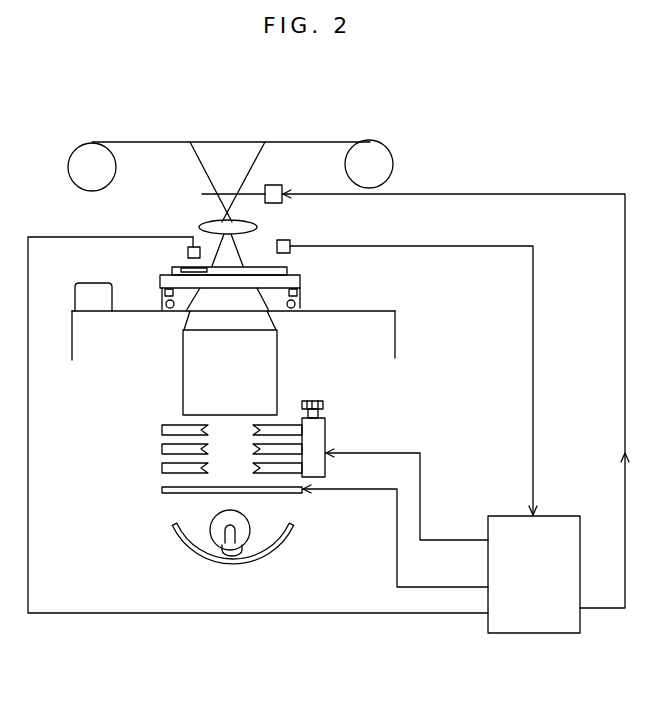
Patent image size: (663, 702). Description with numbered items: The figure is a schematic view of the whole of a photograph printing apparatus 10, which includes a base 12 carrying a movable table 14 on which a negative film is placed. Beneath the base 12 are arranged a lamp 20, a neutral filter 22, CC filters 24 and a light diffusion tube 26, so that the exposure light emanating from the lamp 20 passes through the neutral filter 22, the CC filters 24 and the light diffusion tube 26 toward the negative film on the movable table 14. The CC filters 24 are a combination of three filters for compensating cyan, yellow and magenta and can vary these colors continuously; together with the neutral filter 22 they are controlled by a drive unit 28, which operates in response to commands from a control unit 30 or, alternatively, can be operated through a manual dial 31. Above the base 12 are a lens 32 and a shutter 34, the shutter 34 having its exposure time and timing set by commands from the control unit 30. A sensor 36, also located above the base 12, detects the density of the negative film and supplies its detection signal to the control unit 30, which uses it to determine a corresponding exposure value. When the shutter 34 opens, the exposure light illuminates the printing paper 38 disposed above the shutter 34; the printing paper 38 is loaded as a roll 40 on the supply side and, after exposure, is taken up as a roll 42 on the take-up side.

The photograph printing apparatus 10 is at (478, 133).
The base 12 is at (382, 310).
The movable table 14 is at (300, 279).
The lamp 20 is at (213, 548).
The neutral filter 22 is at (165, 493).
The CC filters 24 is at (162, 429).
The light diffusion tube 26 is at (278, 356).
The drive unit 28 is at (326, 432).
The control unit 30 is at (503, 515).
The manual dial 31 is at (323, 403).
The lens 32 is at (199, 226).
The shutter 34 is at (205, 193).
The sensor 36 is at (290, 241).
The printing paper 38 is at (157, 142).
The roll 40 is at (91, 146).
The roll 42 is at (371, 145).